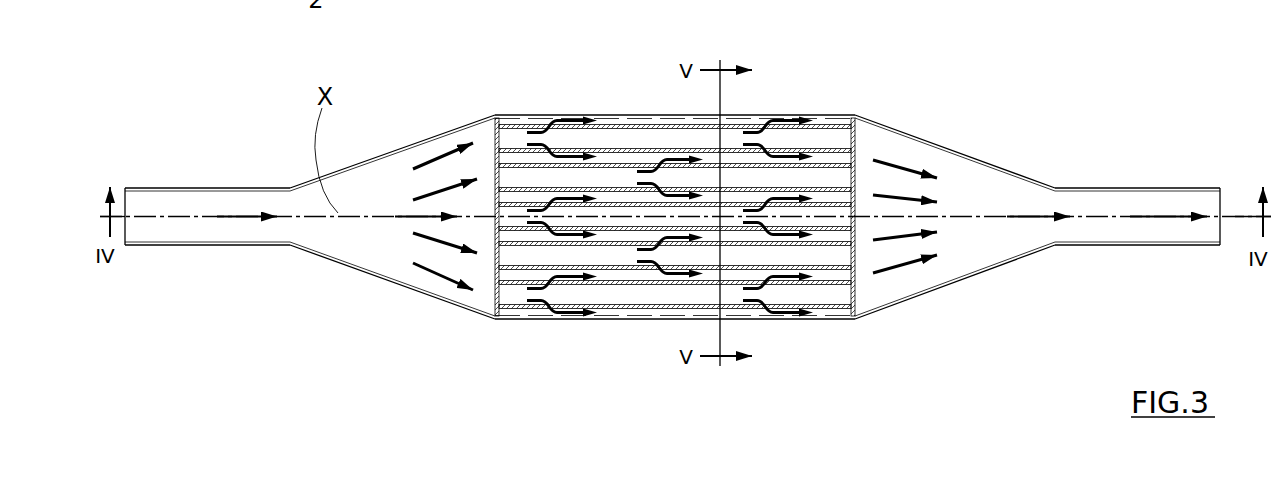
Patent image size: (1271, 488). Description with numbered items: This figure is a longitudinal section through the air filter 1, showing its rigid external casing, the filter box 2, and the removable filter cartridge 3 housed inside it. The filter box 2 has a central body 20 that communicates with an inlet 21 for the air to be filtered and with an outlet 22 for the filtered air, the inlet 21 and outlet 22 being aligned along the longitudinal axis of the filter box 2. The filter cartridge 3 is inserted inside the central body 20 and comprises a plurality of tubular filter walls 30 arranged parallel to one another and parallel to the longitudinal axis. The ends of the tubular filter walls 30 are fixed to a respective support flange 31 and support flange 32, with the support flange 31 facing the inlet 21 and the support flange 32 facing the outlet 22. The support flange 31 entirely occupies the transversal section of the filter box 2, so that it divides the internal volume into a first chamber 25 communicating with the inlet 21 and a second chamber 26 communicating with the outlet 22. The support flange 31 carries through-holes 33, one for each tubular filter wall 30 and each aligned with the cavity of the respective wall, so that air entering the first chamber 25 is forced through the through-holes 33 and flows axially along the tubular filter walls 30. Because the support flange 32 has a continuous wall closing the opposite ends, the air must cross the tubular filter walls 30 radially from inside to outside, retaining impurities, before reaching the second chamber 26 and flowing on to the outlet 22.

The air filter 1 is at (240, 155).
The filter box 2 is at (352, 270).
The filter cartridge 3 is at (489, 278).
The central body 20 is at (627, 320).
The inlet 21 is at (205, 245).
The outlet 22 is at (1138, 187).
The first chamber 25 is at (351, 200).
The second chamber 26 is at (757, 118).
The tubular filter walls 30 is at (645, 124).
The support flange 31 is at (467, 112).
The support flange 32 is at (857, 157).
The through-holes 33 is at (490, 173).